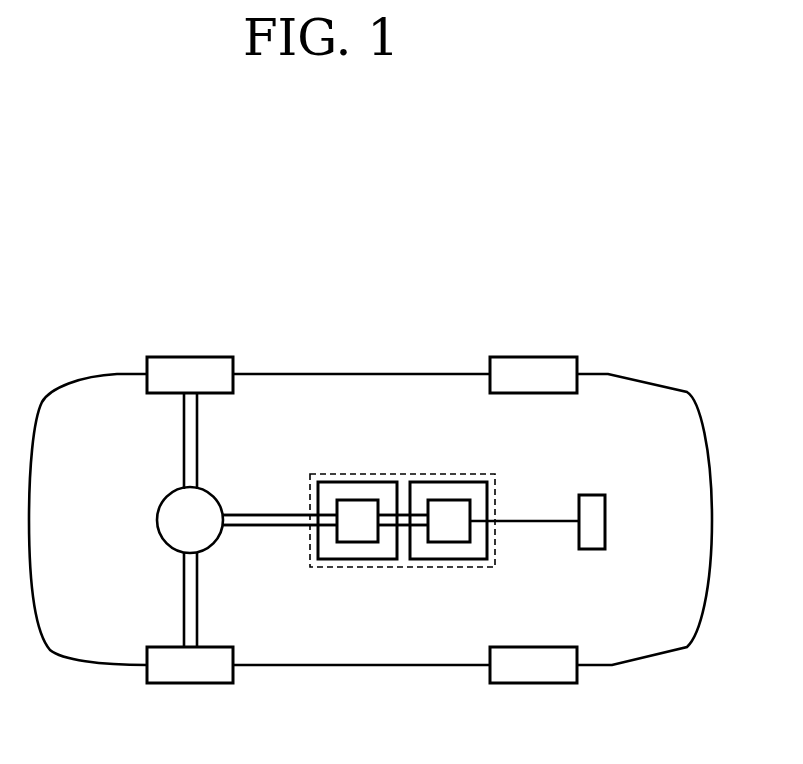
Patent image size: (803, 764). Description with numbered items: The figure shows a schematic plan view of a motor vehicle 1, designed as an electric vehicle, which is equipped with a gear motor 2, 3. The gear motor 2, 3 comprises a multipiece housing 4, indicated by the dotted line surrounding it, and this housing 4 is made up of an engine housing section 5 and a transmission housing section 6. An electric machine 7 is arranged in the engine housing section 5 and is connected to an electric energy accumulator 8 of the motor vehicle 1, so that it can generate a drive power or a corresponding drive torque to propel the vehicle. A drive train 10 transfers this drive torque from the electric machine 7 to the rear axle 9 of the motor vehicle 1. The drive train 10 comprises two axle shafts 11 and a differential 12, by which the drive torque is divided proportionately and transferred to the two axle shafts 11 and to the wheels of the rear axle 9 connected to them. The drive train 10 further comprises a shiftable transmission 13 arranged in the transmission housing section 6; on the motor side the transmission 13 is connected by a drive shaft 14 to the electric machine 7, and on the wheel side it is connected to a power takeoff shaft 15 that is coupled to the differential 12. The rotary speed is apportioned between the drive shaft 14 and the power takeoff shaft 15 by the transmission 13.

The motor vehicle 1 is at (540, 335).
The gear motor 2 is at (402, 416).
The gear motor 3 is at (406, 463).
The multipiece housing 4 is at (459, 484).
The engine housing section 5 is at (474, 482).
The transmission housing section 6 is at (372, 482).
The electric machine 7 is at (447, 543).
The electric energy accumulator 8 is at (607, 521).
The rear axle 9 is at (191, 356).
The drive train 10 is at (261, 497).
The axle shafts 11 is at (184, 453).
The differential 12 is at (157, 520).
The shiftable transmission 13 is at (347, 500).
The drive shaft 14 is at (403, 528).
The power takeoff shaft 15 is at (261, 528).